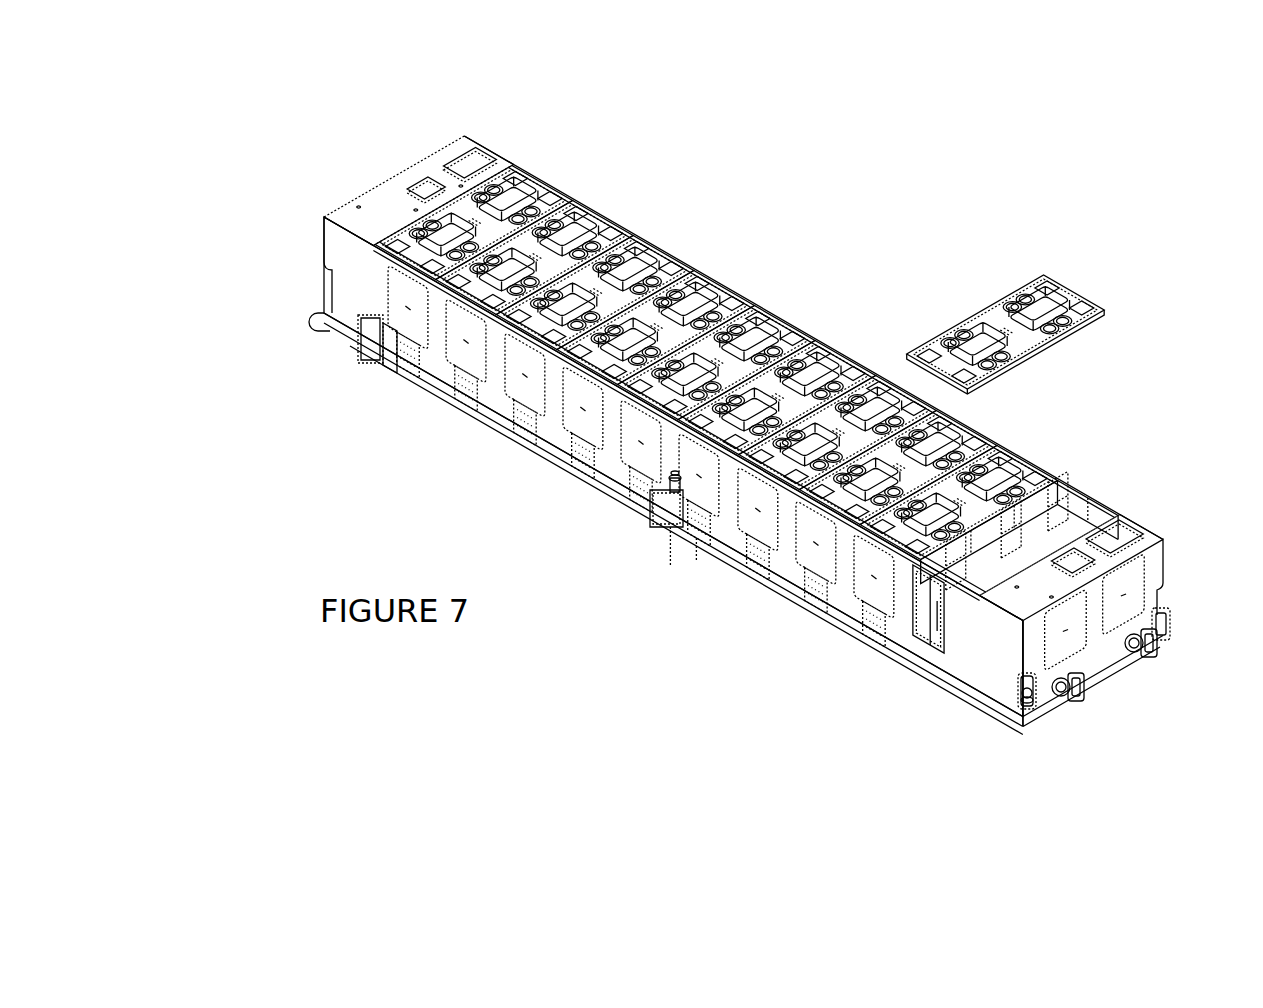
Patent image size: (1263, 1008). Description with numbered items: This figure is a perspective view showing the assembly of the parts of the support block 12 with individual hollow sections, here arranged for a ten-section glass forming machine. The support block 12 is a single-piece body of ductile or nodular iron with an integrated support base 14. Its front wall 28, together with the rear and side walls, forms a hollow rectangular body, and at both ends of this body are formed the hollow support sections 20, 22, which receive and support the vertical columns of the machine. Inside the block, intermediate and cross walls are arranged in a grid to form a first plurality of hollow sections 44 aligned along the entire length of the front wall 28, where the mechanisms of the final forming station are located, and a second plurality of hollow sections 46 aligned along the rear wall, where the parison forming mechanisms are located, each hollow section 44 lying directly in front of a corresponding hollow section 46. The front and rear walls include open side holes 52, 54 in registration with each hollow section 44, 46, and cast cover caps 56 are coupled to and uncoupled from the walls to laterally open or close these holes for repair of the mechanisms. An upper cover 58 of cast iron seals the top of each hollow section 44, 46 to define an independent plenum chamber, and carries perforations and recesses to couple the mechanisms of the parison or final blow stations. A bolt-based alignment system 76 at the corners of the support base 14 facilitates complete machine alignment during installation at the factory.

The support block 12 is at (418, 138).
The support base 14 is at (988, 675).
The hollow support section 20 is at (372, 212).
The hollow support section 22 is at (1098, 550).
The front wall 28 is at (437, 322).
The first plurality of hollow sections 44 is at (960, 549).
The second plurality of hollow sections 46 is at (1040, 514).
The open side hole 52 is at (930, 596).
The open side hole 54 is at (1067, 503).
The cover cap 56 is at (528, 372).
The upper cover 58 is at (1018, 300).
The bolt-based alignment system 76 is at (318, 308).